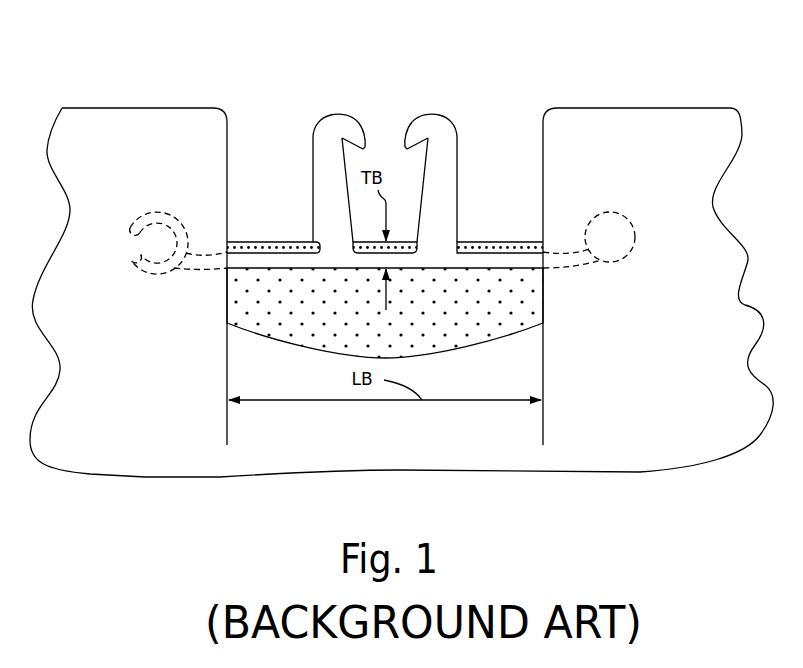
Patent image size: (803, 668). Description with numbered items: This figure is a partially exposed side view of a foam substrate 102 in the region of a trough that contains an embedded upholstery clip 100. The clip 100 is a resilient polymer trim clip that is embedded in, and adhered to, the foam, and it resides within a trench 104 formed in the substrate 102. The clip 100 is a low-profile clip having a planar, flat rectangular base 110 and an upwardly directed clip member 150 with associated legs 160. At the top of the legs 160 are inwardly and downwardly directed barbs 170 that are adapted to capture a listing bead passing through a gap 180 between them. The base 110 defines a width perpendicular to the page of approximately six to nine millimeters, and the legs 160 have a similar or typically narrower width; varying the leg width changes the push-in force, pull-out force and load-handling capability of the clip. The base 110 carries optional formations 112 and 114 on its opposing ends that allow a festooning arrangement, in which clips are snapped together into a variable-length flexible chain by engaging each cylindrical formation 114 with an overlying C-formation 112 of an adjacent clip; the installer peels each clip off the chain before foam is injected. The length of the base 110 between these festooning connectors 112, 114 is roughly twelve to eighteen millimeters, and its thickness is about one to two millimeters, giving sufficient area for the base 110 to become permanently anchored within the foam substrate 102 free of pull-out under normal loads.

The upholstery clip 100 is at (374, 142).
The foam substrate 102 is at (630, 118).
The trench 104 is at (280, 138).
The base 110 is at (495, 258).
The C-formation 112 is at (147, 277).
The cylindrical formation 114 is at (627, 218).
The clip member 150 is at (316, 223).
The legs 160 is at (320, 207).
The barbs 170 is at (355, 127).
The gap 180 is at (382, 127).